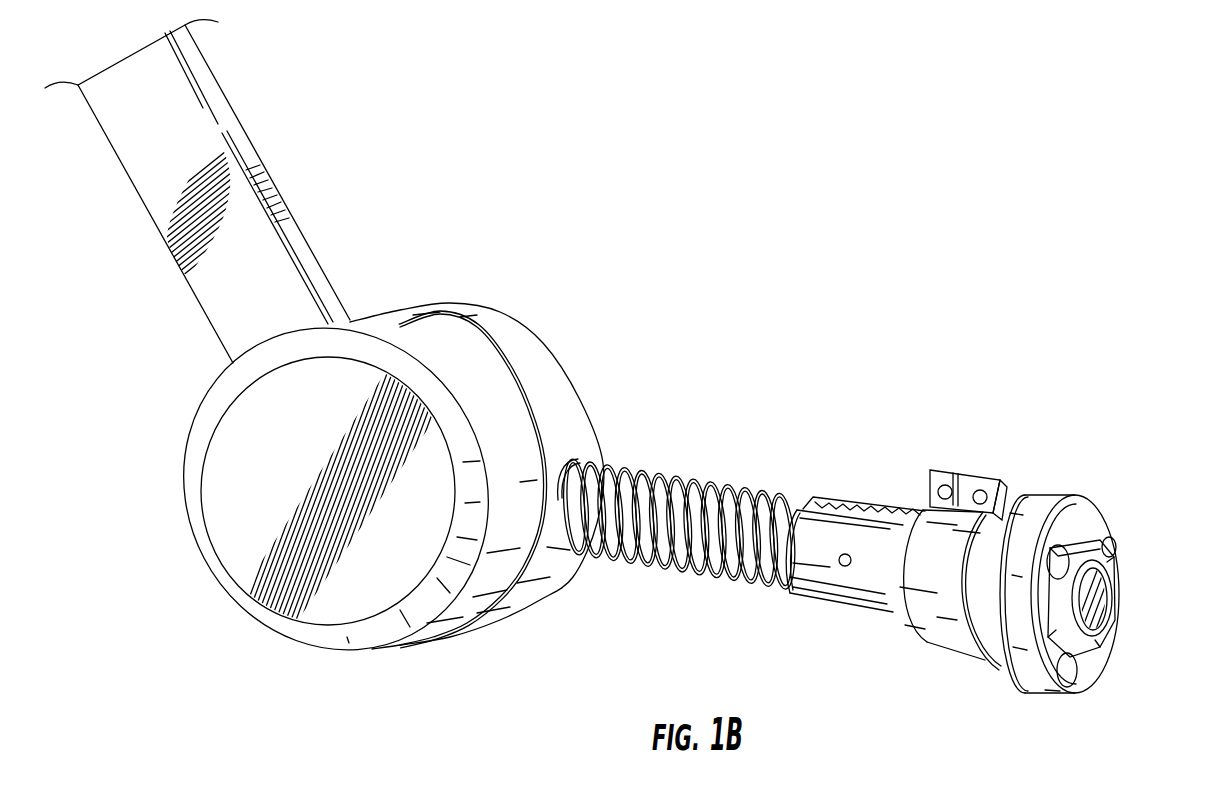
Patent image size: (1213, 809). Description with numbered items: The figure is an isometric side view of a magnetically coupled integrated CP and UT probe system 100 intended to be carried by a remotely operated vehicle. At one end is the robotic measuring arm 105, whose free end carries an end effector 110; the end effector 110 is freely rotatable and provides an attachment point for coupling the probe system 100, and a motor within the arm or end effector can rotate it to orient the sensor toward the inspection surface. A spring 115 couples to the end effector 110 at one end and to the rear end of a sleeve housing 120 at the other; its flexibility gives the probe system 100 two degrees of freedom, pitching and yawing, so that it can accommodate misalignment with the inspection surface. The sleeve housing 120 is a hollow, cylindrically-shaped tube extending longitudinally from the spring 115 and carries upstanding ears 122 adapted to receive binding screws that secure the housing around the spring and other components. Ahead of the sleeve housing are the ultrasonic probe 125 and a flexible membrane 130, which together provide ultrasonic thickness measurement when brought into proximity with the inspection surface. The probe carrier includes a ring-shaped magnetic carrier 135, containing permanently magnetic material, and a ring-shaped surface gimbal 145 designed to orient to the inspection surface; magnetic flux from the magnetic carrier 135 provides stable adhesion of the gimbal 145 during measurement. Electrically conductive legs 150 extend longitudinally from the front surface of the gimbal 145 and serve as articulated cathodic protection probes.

The magnetically coupled integrated CP and UT probe system 100 is at (1008, 338).
The robotic measuring arm 105 is at (257, 165).
The end effector 110 is at (545, 360).
The spring 115 is at (652, 566).
The sleeve housing 120 is at (858, 575).
The upstanding ears 122 is at (930, 490).
The ultrasonic probe 125 is at (977, 592).
The flexible membrane 130 is at (1102, 600).
The magnetic carrier 135 is at (1001, 650).
The surface gimbal 145 is at (1090, 512).
The electrically conductive legs 150 is at (1058, 546).